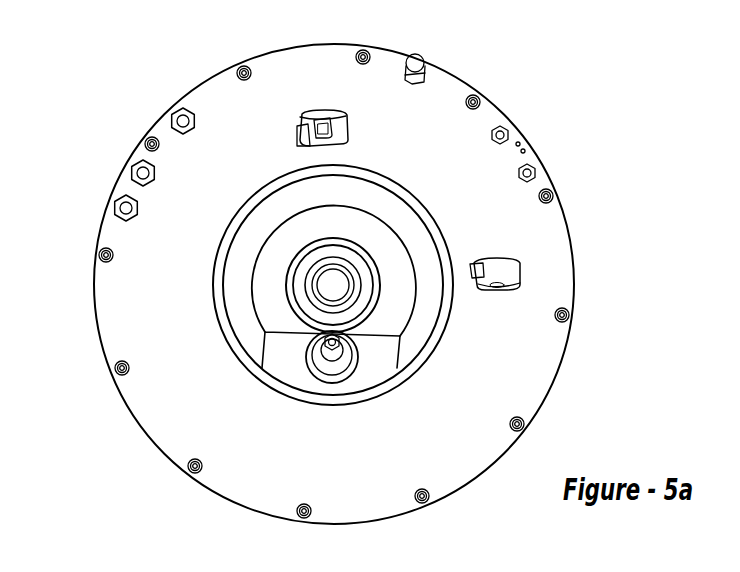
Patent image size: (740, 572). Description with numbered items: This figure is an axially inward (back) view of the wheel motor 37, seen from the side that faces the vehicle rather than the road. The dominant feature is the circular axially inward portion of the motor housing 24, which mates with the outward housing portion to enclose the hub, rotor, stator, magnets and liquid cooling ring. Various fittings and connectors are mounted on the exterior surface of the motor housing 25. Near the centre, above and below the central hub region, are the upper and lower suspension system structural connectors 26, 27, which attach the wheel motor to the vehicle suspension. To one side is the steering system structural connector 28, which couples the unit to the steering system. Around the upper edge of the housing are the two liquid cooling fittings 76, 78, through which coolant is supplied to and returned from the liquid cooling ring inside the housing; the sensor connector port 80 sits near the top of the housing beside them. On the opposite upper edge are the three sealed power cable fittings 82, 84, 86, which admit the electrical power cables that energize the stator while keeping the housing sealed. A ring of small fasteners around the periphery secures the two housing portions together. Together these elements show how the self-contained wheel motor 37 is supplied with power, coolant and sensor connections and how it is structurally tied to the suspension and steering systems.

The axially inward portion of the motor housing 24 is at (535, 234).
The exterior surface of the motor housing 25 is at (363, 100).
The upper suspension system structural connector 26 is at (297, 116).
The lower suspension system structural connector 27 is at (338, 348).
The steering system structural connector 28 is at (503, 292).
The wheel motor 37 is at (646, 108).
The liquid cooling fitting 76 is at (502, 132).
The liquid cooling fitting 78 is at (528, 172).
The sensor connector port 80 is at (420, 58).
The sealed power cable fitting 82 is at (170, 114).
The sealed power cable fitting 84 is at (136, 172).
The sealed power cable fitting 86 is at (120, 208).